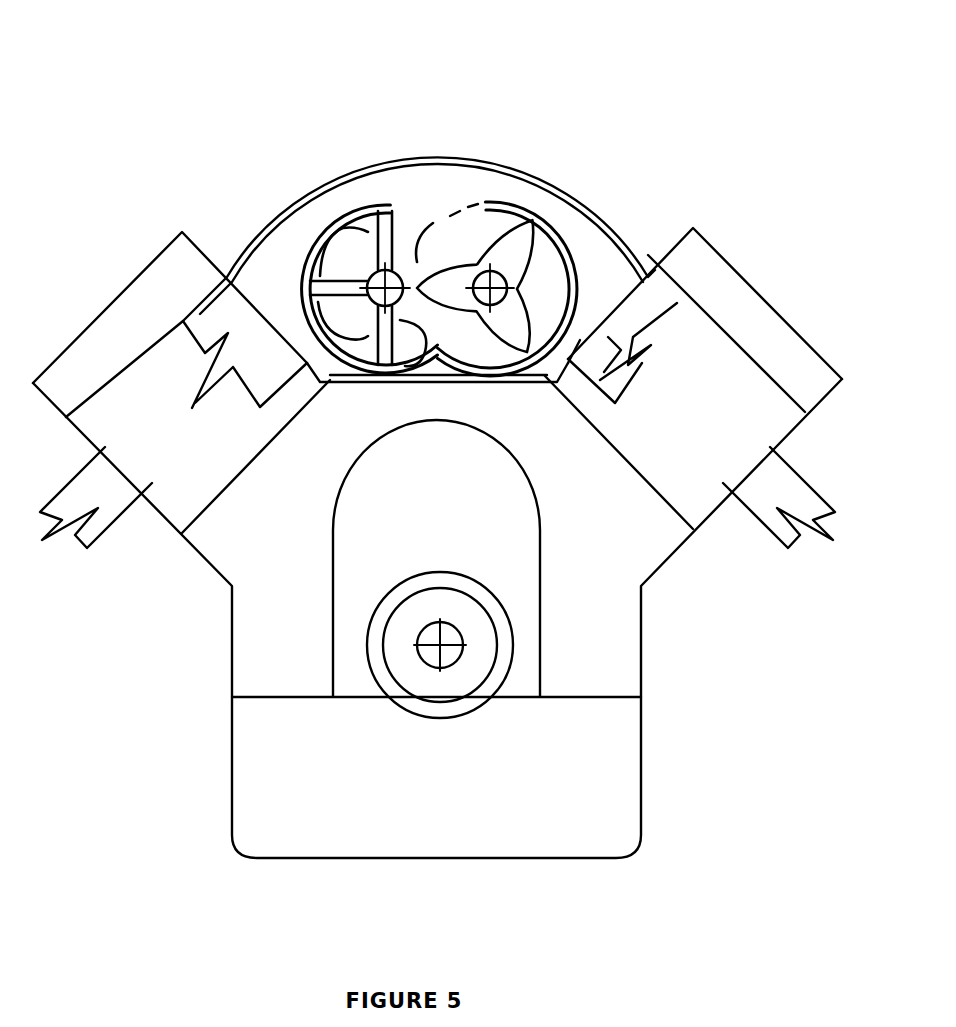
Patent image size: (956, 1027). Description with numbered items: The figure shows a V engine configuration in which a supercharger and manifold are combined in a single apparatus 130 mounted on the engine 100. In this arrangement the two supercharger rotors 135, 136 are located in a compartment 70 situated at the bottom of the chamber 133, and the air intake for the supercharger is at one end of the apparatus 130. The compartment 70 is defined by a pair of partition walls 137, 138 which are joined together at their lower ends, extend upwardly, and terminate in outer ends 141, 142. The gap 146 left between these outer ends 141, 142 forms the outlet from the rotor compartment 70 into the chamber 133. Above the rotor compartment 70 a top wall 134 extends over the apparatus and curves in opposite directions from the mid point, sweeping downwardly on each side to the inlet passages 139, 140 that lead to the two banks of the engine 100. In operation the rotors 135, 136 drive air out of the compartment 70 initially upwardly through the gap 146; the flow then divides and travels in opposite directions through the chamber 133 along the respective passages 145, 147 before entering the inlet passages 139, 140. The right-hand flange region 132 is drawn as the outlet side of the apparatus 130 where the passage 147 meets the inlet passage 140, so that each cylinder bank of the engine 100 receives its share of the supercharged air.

The engine 100 is at (520, 862).
The apparatus 130 is at (300, 178).
The passage 145 is at (350, 178).
The partition wall 137 is at (300, 250).
The inlet passage 139 is at (255, 300).
The right outlet flange 132 is at (655, 258).
The passage 147 is at (615, 258).
The inlet passage 140 is at (602, 289).
The partition wall 138 is at (603, 237).
The outer end 141 is at (400, 213).
The top wall 134 is at (380, 165).
The chamber 133 is at (488, 200).
The gap 146 is at (457, 203).
The outer end 142 is at (543, 250).
The rotor 135 is at (456, 200).
The rotor 136 is at (558, 242).
The compartment 70 is at (598, 240).